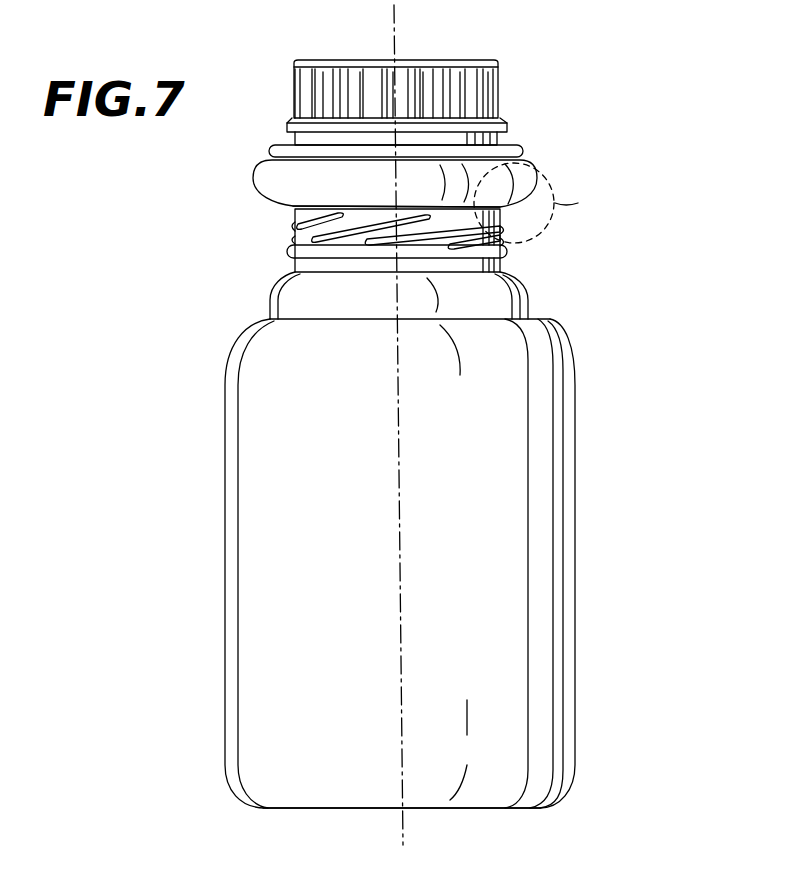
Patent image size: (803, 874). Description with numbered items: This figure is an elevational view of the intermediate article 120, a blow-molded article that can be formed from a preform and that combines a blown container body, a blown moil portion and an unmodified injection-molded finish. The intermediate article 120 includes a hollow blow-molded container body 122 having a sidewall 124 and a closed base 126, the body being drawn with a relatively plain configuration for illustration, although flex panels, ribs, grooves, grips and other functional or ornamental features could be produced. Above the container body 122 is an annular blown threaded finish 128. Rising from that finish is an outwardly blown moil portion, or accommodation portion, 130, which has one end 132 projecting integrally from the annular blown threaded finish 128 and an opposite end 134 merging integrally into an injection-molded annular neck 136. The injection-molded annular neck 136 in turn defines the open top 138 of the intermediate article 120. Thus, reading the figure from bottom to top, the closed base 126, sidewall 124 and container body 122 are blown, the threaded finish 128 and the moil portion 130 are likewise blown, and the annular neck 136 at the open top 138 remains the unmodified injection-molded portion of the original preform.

The intermediate article 120 is at (633, 310).
The container body 122 is at (567, 573).
The sidewall 124 is at (563, 478).
The closed base 126 is at (463, 808).
The annular blown threaded finish 128 is at (293, 240).
The moil portion 130 is at (530, 158).
The one end 132 is at (283, 207).
The opposite end 134 is at (257, 163).
The injection-molded annular neck 136 is at (498, 62).
The open top 138 is at (413, 60).